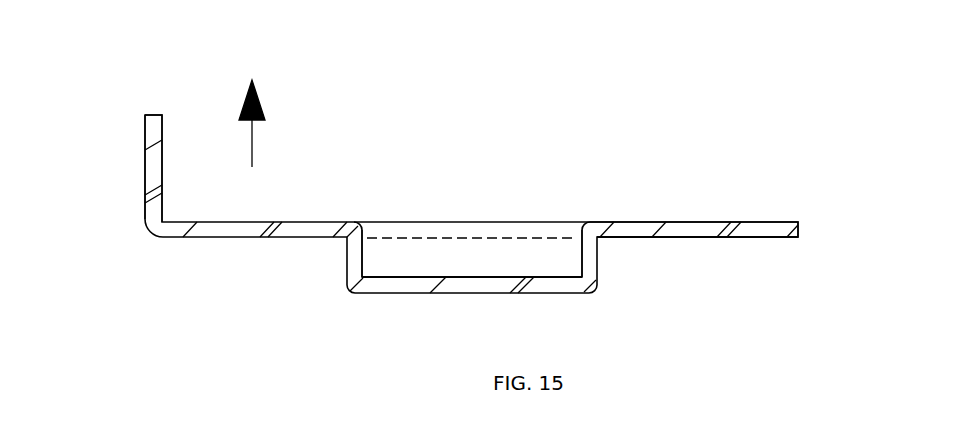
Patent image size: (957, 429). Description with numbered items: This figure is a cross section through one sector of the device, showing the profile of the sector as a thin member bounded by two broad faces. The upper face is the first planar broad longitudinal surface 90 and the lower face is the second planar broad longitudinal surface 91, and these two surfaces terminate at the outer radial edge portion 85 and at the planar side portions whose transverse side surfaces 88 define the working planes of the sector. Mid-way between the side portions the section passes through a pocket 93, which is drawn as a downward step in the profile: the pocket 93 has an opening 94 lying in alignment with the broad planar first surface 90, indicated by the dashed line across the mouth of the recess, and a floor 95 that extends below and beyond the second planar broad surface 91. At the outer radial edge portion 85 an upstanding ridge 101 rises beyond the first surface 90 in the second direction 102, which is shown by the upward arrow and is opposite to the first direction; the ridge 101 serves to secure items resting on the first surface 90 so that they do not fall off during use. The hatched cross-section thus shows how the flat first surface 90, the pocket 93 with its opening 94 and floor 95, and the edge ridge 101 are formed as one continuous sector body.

The outer radial edge portion 85 is at (436, 204).
The side surface 88 is at (145, 150).
The ridge 101 is at (145, 175).
The second direction 102 is at (252, 150).
The pocket 93 is at (449, 199).
The opening 94 is at (532, 222).
The floor 95 is at (423, 277).
The first planar broad longitudinal surface 90 is at (675, 222).
The second planar broad longitudinal surface 91 is at (742, 238).